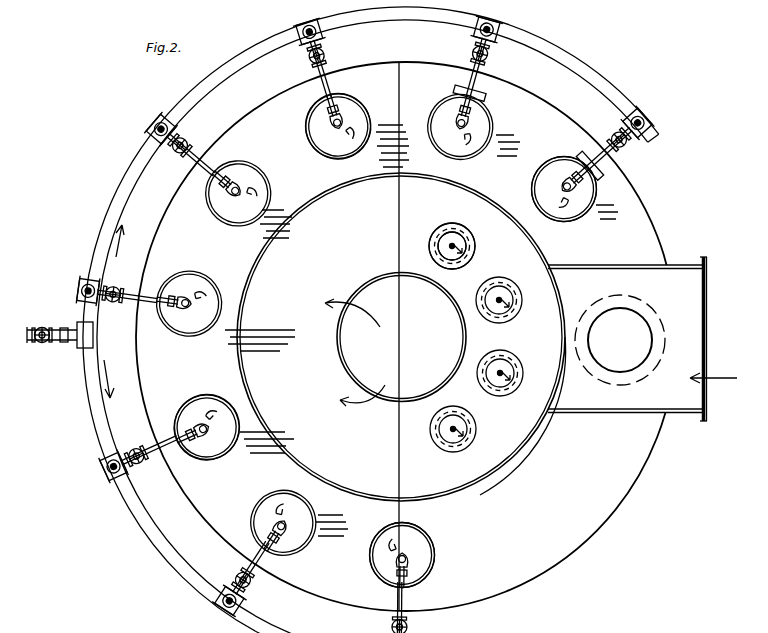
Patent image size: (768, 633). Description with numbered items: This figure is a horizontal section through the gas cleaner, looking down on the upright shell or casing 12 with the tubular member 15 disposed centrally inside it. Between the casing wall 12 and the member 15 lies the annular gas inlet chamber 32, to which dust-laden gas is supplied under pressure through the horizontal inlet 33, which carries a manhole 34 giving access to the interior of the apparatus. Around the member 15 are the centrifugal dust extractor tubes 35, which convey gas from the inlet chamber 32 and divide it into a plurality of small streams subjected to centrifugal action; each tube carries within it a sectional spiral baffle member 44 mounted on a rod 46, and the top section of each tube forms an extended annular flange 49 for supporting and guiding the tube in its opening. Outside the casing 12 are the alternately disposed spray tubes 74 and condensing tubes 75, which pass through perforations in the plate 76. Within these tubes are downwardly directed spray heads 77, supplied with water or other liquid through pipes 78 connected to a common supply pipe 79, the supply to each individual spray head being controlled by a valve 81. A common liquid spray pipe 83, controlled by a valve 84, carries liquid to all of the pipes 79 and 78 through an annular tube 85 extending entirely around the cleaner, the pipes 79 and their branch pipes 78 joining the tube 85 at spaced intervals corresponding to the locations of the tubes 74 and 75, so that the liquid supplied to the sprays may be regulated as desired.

The upright shell or casing 12 is at (474, 182).
The tubular member 15 is at (460, 360).
The annular gas inlet chamber 32 is at (524, 443).
The horizontal inlet 33 is at (642, 339).
The manhole 34 is at (641, 332).
The centrifugal dust extractor tube 35 is at (447, 240).
The sectional spiral baffle member 44 is at (505, 355).
The rod 46 is at (440, 256).
The extended annular flange 49 is at (470, 252).
The spray tube 74 is at (348, 160).
The condensing tube 75 is at (270, 186).
The plate 76 is at (636, 218).
The spray head 77 is at (245, 184).
The pipe 78 is at (193, 152).
The common supply pipe 79 is at (496, 22).
The valve 81 is at (322, 52).
The common liquid spray pipe 83 is at (67, 341).
The valve 84 is at (38, 345).
The annular tube 85 is at (124, 186).